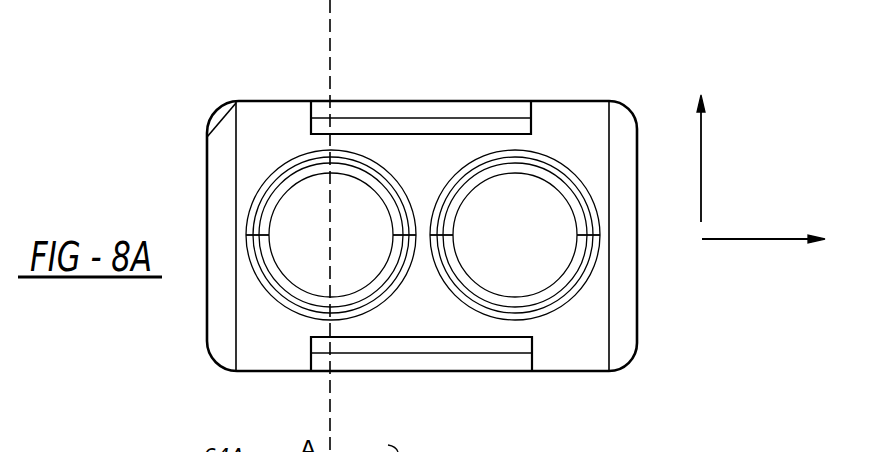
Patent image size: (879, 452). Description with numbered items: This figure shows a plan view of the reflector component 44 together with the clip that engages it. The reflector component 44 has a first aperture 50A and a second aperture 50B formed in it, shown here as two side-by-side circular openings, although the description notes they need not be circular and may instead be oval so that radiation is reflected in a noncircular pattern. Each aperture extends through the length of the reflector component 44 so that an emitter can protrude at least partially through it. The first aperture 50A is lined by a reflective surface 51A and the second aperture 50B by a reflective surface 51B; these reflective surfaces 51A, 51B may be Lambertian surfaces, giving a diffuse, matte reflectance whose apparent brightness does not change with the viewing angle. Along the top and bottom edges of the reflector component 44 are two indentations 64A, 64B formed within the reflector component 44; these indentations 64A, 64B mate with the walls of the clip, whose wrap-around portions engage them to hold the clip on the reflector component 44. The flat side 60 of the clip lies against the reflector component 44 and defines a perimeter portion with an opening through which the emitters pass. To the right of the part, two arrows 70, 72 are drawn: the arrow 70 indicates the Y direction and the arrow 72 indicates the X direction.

The reflector component 44 is at (590, 148).
The first aperture 50A is at (318, 215).
The second aperture 50B is at (517, 215).
The reflective surface 51A is at (262, 220).
The reflective surface 51B is at (582, 243).
The indentation 64A is at (475, 108).
The indentation 64B is at (372, 354).
The flat side 60 is at (452, 356).
The arrow 70 is at (701, 165).
The arrow 72 is at (752, 239).